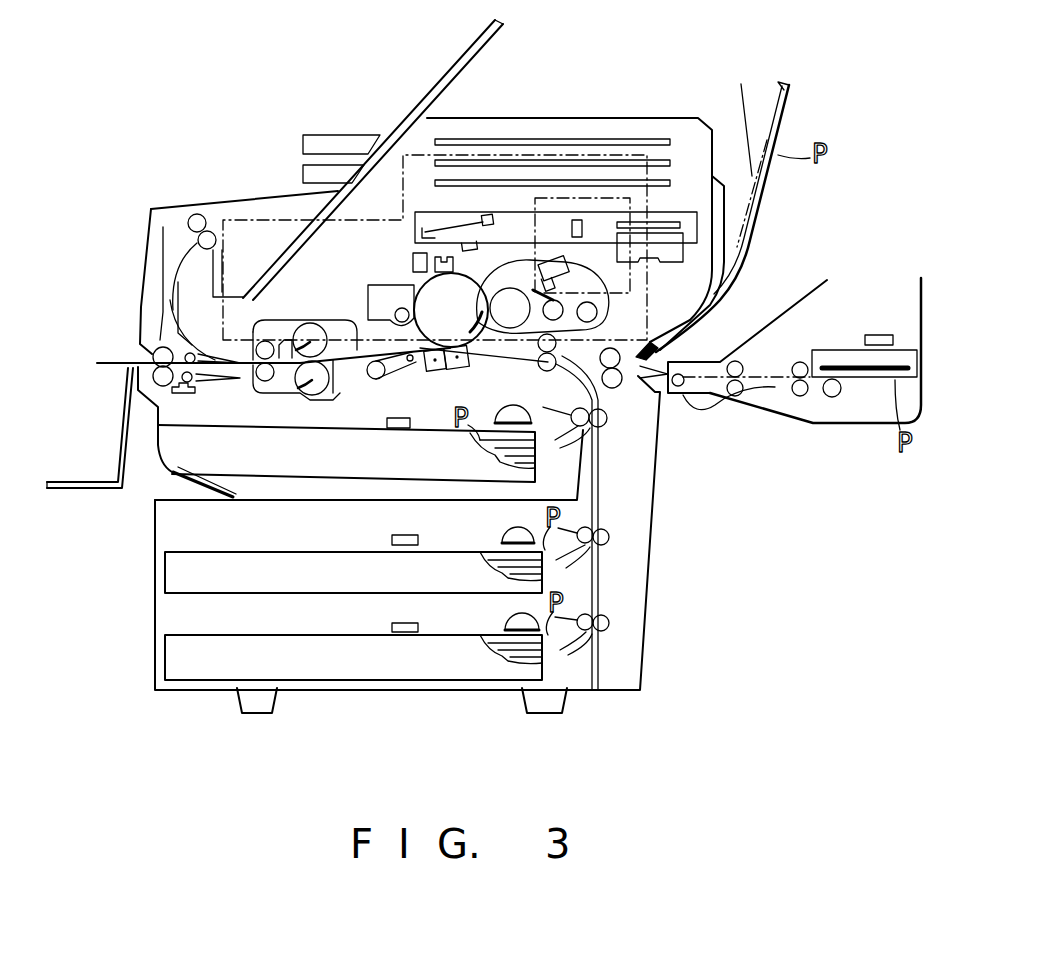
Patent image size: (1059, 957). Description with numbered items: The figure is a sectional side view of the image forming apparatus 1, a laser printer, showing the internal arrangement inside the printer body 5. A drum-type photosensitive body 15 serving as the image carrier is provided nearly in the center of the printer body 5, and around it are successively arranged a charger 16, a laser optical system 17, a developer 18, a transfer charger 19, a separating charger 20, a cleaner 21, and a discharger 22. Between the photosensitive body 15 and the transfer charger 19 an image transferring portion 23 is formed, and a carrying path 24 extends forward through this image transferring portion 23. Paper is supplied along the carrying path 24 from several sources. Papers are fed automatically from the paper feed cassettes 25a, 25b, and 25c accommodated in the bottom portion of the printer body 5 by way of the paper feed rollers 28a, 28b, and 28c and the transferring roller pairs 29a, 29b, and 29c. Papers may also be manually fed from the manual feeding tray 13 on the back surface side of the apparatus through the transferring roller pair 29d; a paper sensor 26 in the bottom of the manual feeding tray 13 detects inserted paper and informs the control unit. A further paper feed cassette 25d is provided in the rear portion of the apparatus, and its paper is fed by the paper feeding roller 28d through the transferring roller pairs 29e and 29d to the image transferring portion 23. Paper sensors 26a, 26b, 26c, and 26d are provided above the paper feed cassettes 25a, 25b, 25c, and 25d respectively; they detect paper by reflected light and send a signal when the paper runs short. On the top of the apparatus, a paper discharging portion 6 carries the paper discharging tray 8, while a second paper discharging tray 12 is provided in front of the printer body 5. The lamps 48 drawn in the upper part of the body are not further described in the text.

The image forming apparatus 1 is at (760, 212).
The printer body 5 is at (678, 118).
The paper discharging portion 6 is at (237, 235).
The paper discharging tray 8 is at (462, 60).
The paper discharging tray 12 is at (88, 488).
The manual feeding tray 13 is at (786, 110).
The photosensitive body 15 is at (463, 290).
The charger 16 is at (440, 257).
The laser optical system 17 is at (677, 225).
The developer 18 is at (592, 300).
The transfer charger 19 is at (462, 368).
The separating charger 20 is at (433, 370).
The cleaner 21 is at (368, 287).
The discharger 22 is at (413, 262).
The image transferring portion 23 is at (455, 347).
The carrying path 24 is at (355, 338).
The paper feed cassette 25a is at (168, 452).
The paper feed cassette 25b is at (265, 590).
The paper feed cassette 25c is at (200, 685).
The paper feed cassette 25d is at (838, 350).
The paper sensor 26 is at (650, 345).
The paper sensor 26a is at (398, 428).
The paper sensor 26b is at (392, 540).
The paper sensor 26c is at (392, 628).
The paper sensor 26d is at (882, 335).
The paper feed roller 28a is at (513, 403).
The paper feed roller 28b is at (504, 535).
The paper feed roller 28c is at (506, 625).
The paper feeding roller 28d is at (832, 398).
The transferring roller pair 29a is at (612, 445).
The transferring roller pair 29b is at (630, 525).
The transferring roller pair 29c is at (604, 631).
The transferring roller pair 29d is at (604, 426).
The transferring roller pair 29e is at (722, 400).
The exposure lamps 48 is at (585, 183).